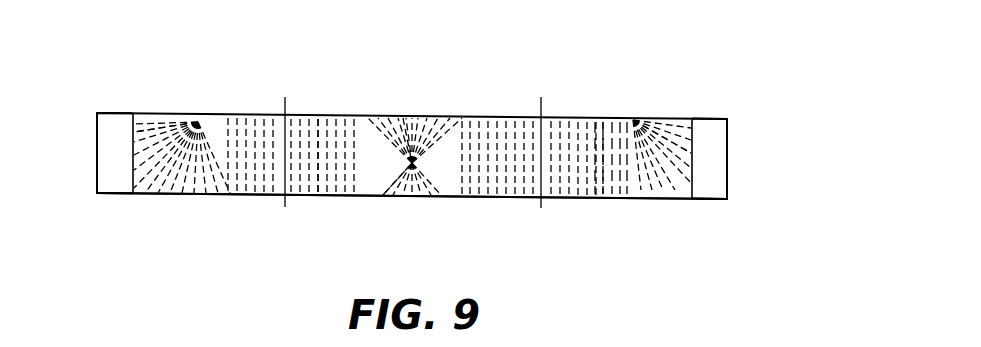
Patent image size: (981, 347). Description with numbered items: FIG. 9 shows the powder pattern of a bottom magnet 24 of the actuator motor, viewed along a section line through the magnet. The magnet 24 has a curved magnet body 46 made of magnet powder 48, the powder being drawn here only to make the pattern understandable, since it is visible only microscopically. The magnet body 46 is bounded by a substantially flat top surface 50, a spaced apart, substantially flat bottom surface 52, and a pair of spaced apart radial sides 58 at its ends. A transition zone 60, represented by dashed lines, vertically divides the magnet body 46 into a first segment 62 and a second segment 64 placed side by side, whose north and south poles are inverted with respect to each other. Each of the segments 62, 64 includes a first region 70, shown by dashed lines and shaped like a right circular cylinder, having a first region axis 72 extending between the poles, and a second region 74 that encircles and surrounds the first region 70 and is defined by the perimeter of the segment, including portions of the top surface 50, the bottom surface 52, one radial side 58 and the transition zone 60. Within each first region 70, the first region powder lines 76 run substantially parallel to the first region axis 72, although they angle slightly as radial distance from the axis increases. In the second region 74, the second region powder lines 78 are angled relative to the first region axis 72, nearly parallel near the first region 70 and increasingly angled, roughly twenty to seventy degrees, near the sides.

The magnet 24 is at (723, 104).
The magnet body 46 is at (729, 132).
The magnet powder 48 is at (155, 117).
The top surface 50 is at (382, 115).
The bottom surface 52 is at (383, 197).
The radial sides 58 is at (106, 157).
The transition zone 60 is at (403, 115).
The first segment 62 is at (181, 112).
The second segment 64 is at (644, 116).
The first region 70 is at (299, 115).
The first region axis 72 is at (284, 97).
The second region 74 is at (164, 199).
The first region powder lines 76 is at (322, 114).
The second region powder lines 78 is at (456, 116).